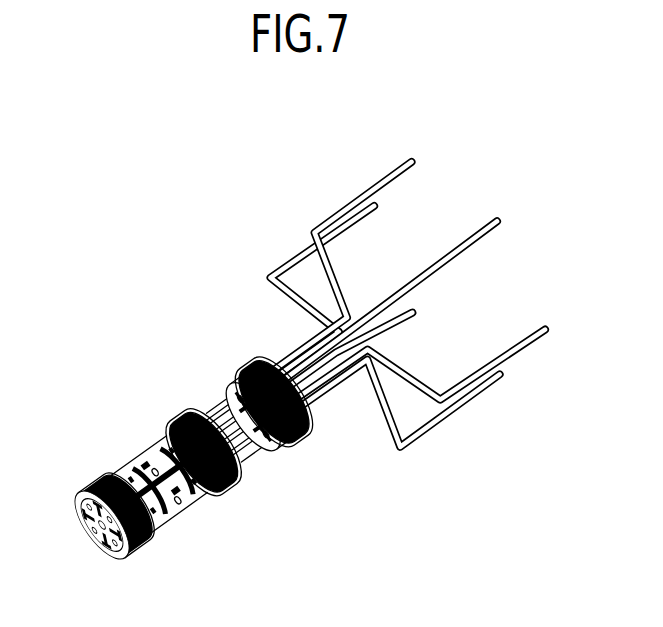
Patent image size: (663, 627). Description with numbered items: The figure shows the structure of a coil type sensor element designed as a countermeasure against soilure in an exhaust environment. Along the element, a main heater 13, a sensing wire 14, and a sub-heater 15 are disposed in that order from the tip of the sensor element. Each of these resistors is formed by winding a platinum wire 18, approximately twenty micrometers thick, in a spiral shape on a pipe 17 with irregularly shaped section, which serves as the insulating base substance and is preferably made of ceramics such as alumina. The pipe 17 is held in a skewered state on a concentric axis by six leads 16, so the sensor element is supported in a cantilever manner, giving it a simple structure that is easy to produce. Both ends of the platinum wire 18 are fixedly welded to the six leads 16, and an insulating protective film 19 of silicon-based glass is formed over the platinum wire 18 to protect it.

The main heater 13 is at (105, 475).
The sensing wire 14 is at (175, 428).
The sub-heater 15 is at (247, 365).
The leads 16 is at (272, 273).
The pipe with irregularly shaped section 17 is at (273, 447).
The platinum wire 18 is at (307, 413).
The insulating protective film 19 is at (170, 522).